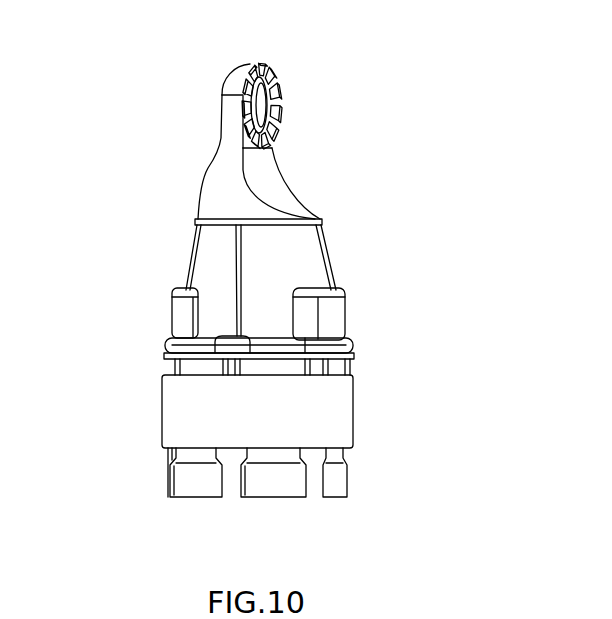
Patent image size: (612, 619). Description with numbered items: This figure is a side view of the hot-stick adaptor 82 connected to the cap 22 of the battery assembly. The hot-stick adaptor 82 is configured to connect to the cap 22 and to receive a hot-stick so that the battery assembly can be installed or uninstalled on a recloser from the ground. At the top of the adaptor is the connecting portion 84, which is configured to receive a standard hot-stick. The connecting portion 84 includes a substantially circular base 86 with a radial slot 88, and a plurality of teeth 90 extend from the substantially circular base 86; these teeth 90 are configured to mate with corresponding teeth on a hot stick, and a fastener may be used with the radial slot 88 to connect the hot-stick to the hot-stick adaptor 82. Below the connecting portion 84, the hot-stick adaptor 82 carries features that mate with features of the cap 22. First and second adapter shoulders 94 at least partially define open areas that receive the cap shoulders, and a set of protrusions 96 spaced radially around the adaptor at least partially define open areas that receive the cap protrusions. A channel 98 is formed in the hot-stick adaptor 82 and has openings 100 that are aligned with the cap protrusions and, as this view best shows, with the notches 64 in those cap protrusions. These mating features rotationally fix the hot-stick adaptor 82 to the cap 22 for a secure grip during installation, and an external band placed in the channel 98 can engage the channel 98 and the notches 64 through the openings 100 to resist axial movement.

The cap 22 is at (165, 469).
The notch 64 is at (228, 370).
The hot-stick adaptor 82 is at (226, 121).
The connecting portion 84 is at (226, 92).
The substantially circular base 86 is at (270, 147).
The radial slot 88 is at (262, 98).
The teeth 90 is at (268, 72).
The adapter shoulders 94 is at (342, 303).
The protrusions 96 is at (322, 348).
The channel 98 is at (288, 368).
The openings 100 is at (218, 357).